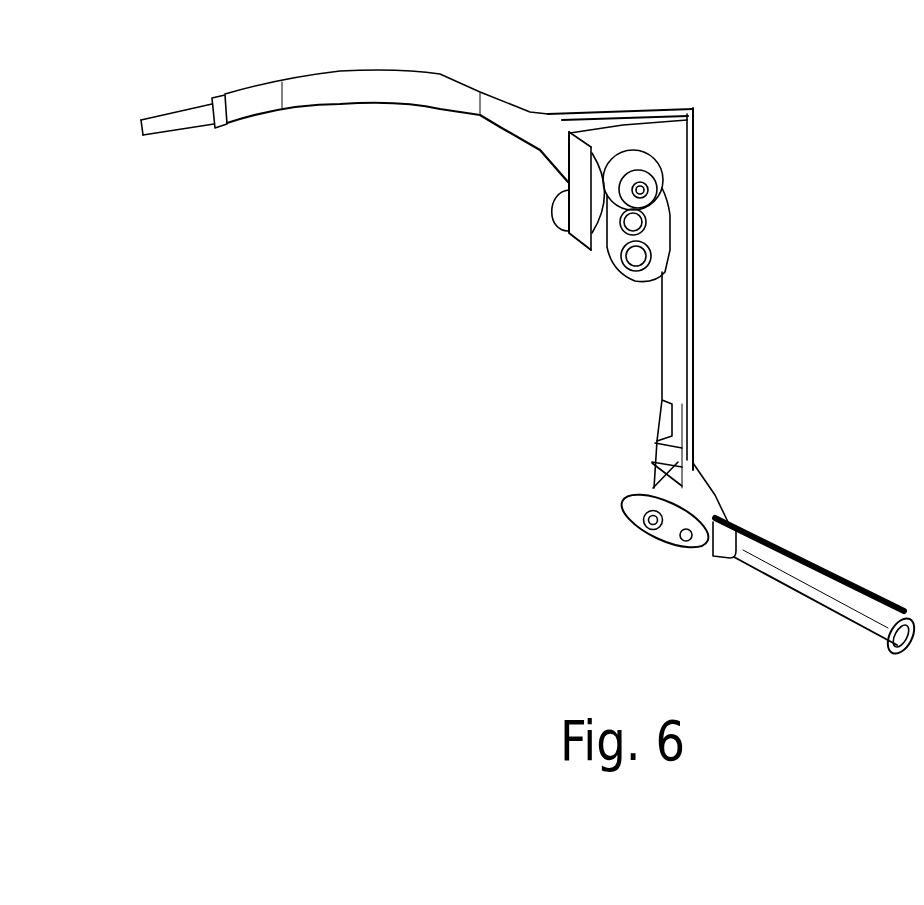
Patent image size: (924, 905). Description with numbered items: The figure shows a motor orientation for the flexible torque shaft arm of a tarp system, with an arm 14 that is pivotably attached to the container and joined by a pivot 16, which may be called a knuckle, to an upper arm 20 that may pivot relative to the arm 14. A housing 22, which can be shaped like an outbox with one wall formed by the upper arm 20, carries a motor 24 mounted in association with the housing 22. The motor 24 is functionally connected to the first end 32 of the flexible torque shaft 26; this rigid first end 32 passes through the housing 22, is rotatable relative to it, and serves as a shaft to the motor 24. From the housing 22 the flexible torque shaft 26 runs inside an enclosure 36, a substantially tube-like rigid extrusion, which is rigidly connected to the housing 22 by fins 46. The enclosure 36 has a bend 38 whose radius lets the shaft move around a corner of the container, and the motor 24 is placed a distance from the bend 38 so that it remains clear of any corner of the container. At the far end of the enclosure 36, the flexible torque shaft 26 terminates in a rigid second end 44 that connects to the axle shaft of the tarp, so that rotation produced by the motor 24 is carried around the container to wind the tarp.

The arm 14 is at (807, 577).
The pivot 16 is at (649, 519).
The upper arm 20 is at (683, 380).
The housing 22 is at (673, 108).
The motor 24 is at (611, 246).
The flexible torque shaft 26 is at (200, 119).
The first end 32 is at (647, 192).
The enclosure 36 is at (390, 97).
The bend 38 is at (413, 73).
The second end 44 is at (140, 122).
The fins 46 is at (597, 117).